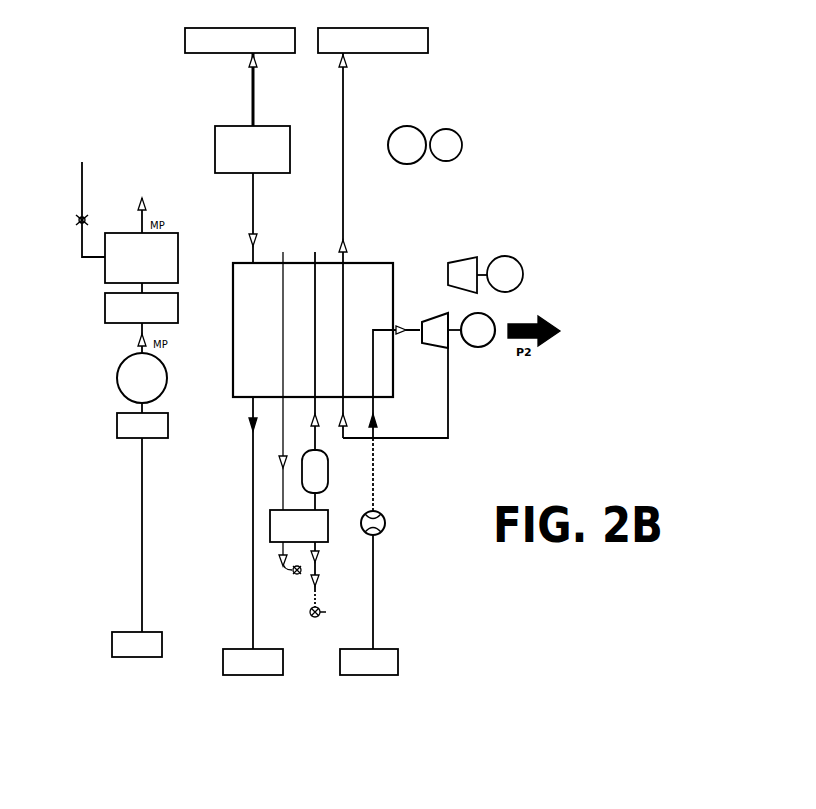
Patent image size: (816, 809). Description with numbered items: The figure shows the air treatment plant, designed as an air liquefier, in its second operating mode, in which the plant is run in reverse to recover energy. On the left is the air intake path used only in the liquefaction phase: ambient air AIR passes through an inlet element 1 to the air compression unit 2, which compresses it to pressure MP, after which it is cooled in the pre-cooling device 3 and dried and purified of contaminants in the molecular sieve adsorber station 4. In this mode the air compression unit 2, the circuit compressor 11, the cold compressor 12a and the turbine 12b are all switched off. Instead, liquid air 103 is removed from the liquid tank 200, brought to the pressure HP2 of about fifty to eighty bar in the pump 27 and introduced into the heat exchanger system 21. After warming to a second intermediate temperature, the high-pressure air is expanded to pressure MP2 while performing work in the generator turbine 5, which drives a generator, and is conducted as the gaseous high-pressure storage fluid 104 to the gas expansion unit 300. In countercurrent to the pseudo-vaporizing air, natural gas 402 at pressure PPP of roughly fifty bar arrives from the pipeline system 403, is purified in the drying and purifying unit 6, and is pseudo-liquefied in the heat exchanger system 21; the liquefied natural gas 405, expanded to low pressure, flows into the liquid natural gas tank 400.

The air filter 1 is at (154, 425).
The air compression unit 2 is at (153, 378).
The pre-cooling device 3 is at (154, 311).
The molecular sieve adsorber station 4 is at (154, 258).
The generator turbine 5 is at (419, 375).
The drying and purifying unit 6 is at (242, 149).
The circuit compressor 11 is at (425, 162).
The cold compressor 12a is at (508, 262).
The turbine 12b is at (461, 263).
The heat exchanger system 21 is at (313, 330).
The pump 27 is at (387, 524).
The liquid air 103 is at (373, 575).
The gaseous high-pressure storage fluid 104 is at (343, 197).
The natural gas 402 is at (251, 97).
The liquefied natural gas 405 is at (253, 553).
The pipeline system 403 is at (240, 40).
The gas expansion unit 300 is at (373, 40).
The liquid natural gas tank 400 is at (253, 662).
The liquid tank 200 is at (369, 662).
The ambient air AIR is at (137, 644).